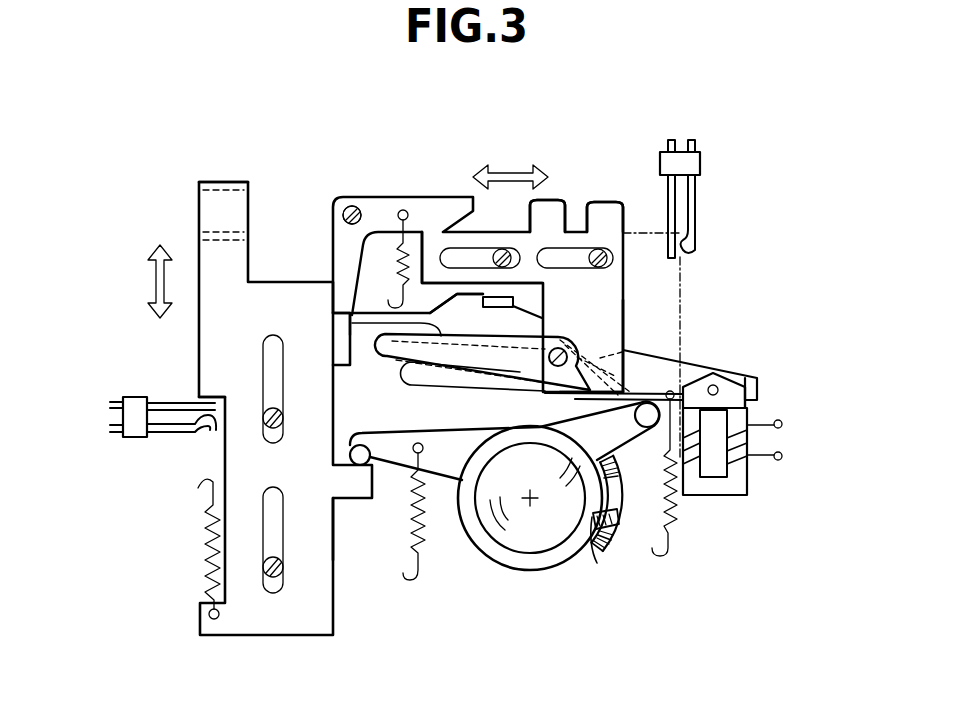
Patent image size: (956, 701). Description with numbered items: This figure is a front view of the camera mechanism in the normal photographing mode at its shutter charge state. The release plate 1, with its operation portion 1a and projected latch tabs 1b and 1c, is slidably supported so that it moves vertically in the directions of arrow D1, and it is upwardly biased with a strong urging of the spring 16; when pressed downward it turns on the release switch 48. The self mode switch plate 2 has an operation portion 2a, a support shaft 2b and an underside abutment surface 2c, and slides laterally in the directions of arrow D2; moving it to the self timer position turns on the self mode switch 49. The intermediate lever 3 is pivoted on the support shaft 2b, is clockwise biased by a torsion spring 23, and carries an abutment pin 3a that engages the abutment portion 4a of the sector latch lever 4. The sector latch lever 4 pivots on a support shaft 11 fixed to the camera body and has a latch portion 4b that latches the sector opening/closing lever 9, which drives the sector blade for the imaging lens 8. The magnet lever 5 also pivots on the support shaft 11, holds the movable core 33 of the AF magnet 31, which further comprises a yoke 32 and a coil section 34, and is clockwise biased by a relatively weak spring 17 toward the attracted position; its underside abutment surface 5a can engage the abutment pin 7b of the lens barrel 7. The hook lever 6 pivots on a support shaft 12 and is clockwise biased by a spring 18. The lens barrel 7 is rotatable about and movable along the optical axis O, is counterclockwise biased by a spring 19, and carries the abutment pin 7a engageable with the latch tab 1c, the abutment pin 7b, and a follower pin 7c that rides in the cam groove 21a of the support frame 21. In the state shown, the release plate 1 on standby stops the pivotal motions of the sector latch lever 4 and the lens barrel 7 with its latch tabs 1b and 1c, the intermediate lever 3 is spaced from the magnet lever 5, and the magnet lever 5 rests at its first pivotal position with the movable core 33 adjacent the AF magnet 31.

The release plate 1 is at (215, 322).
The operation portion 1a is at (200, 186).
The latch tab 1b is at (228, 458).
The latch tab 1c is at (352, 492).
The self mode switch plate 2 is at (477, 212).
The operation portion 2a is at (548, 200).
The support shaft 2b is at (545, 358).
The underside abutment surface 2c is at (657, 385).
The intermediate lever 3 is at (382, 332).
The abutment pin 3a is at (386, 368).
The sector latch lever 4 is at (358, 262).
The abutment portion 4a is at (340, 323).
The latch portion 4b is at (442, 283).
The magnet lever 5 is at (760, 378).
The underside abutment surface 5a is at (741, 365).
The hook lever 6 is at (420, 240).
The lens barrel 7 is at (522, 575).
The abutment pin 7a is at (368, 468).
The abutment pin 7b is at (645, 428).
The follower pin 7c is at (585, 545).
The imaging lens 8 is at (505, 540).
The sector opening/closing lever 9 is at (500, 297).
The support shaft 11 is at (632, 388).
The support shaft 12 is at (346, 206).
The spring 16 is at (205, 530).
The spring 17 is at (675, 530).
The spring 18 is at (399, 213).
The spring 19 is at (418, 580).
The support frame 21 is at (677, 552).
The cam groove 21a is at (630, 548).
The torsion spring 23 is at (525, 375).
The AF magnet 31 is at (770, 492).
The yoke 32 is at (718, 485).
The movable core 33 is at (745, 390).
The coil section 34 is at (788, 440).
The release switch 48 is at (130, 437).
The self mode switch 49 is at (700, 162).
The optical axis O is at (535, 505).
The arrow D1 is at (150, 284).
The arrow D2 is at (512, 170).